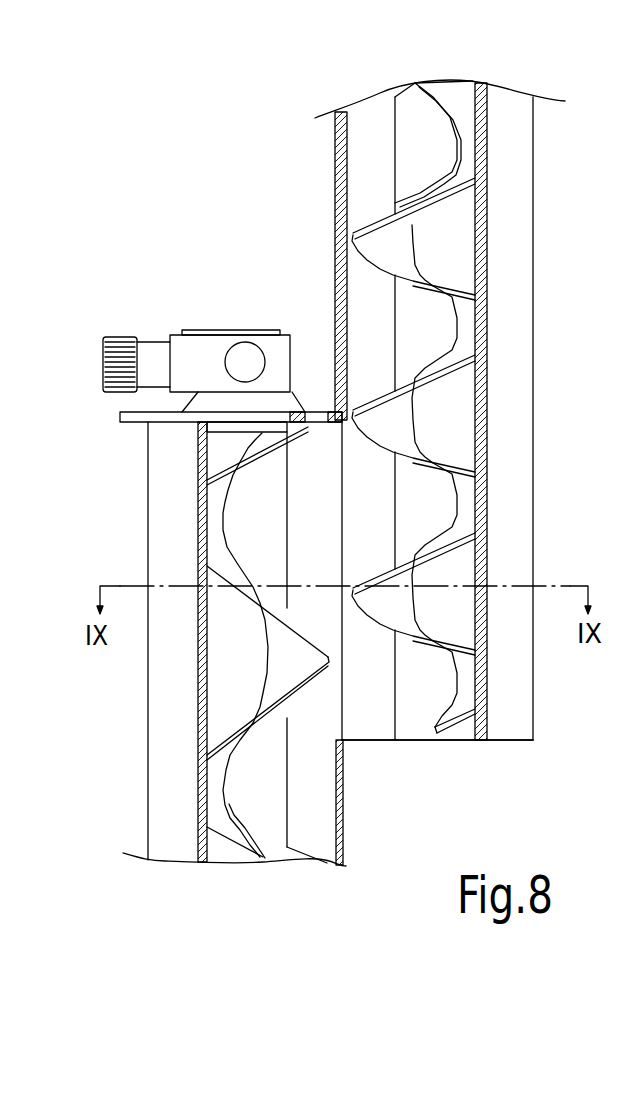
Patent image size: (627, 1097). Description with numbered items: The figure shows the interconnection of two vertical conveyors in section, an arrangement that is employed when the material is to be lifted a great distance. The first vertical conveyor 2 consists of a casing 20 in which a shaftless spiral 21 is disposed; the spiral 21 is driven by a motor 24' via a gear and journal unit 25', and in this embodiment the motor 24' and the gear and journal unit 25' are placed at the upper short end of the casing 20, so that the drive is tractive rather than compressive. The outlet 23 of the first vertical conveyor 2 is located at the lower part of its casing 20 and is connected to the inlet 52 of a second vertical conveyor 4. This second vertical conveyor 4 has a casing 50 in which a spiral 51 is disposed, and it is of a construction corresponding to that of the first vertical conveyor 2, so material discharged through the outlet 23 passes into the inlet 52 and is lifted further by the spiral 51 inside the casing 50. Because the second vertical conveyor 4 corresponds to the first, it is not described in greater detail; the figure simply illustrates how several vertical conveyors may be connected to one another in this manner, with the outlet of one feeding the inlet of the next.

The vertical conveyor 2 is at (148, 737).
The second vertical conveyor 4 is at (530, 197).
The casing 20 is at (148, 538).
The shaftless spiral 21 is at (213, 797).
The outlet 23 is at (342, 713).
The motor 24' is at (136, 330).
The gear and journal unit 25' is at (237, 340).
The casing 50 is at (535, 127).
The spiral 51 is at (387, 107).
The inlet 52 is at (432, 782).